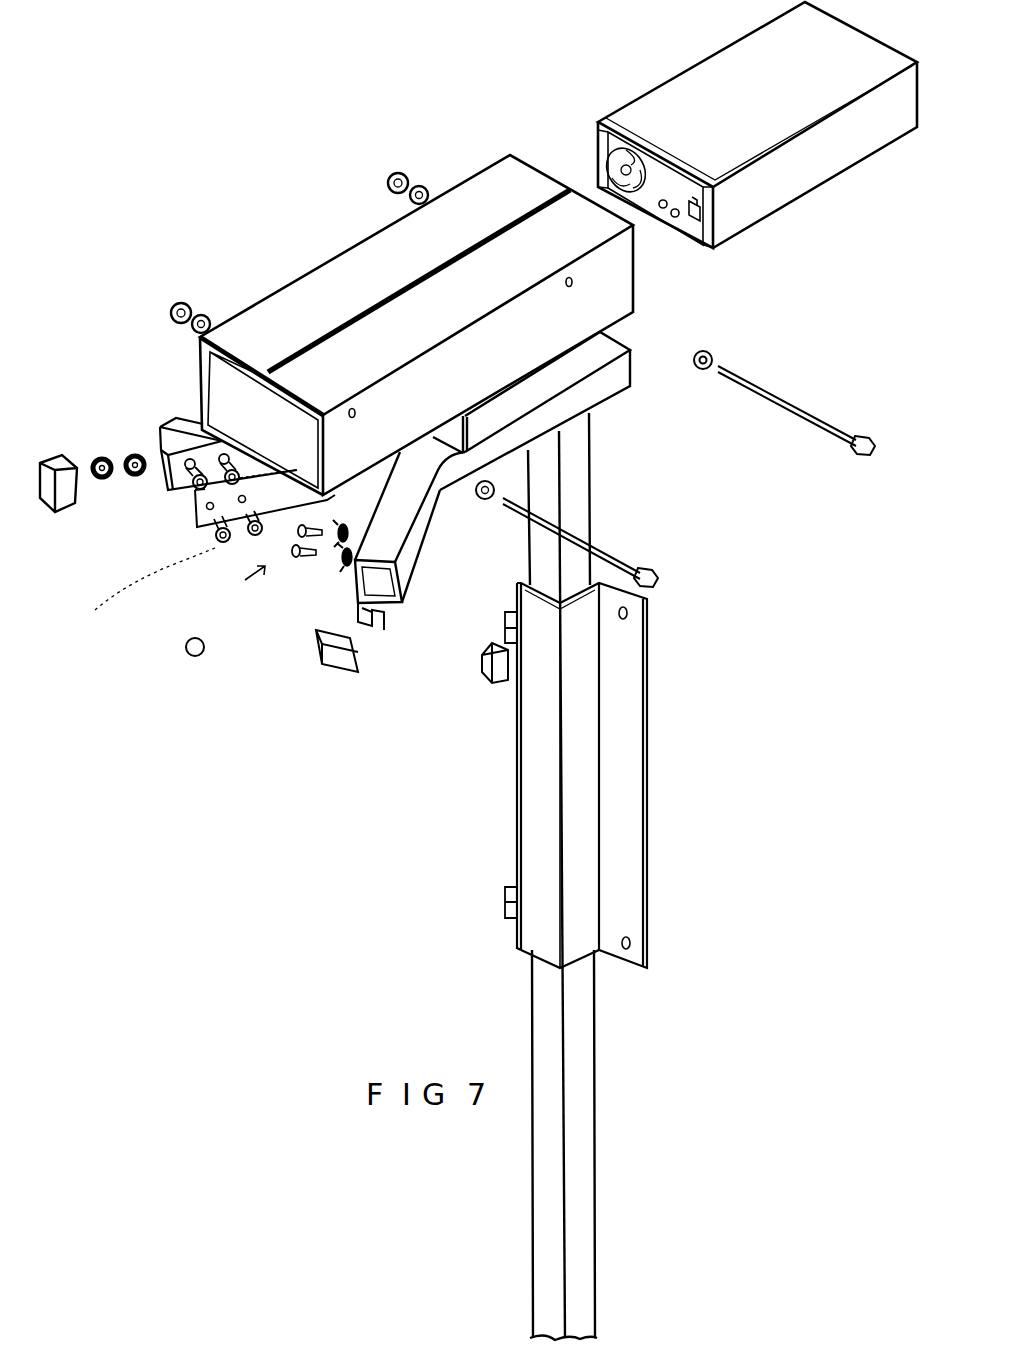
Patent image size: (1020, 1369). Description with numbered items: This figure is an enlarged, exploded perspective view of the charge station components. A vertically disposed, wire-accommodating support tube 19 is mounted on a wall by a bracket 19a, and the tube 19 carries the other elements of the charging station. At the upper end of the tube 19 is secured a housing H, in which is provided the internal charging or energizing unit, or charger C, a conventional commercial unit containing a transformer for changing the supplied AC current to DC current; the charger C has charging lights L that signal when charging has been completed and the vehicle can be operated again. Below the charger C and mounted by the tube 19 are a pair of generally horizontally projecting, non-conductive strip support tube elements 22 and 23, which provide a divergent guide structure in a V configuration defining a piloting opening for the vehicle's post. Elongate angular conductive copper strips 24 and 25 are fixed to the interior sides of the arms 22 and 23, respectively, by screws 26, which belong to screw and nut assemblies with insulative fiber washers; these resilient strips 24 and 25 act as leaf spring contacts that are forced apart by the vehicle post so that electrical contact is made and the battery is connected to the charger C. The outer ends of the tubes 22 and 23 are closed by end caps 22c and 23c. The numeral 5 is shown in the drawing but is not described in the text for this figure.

The charger C is at (678, 98).
The charging lights L is at (664, 200).
The housing H is at (618, 300).
The sensor assembly 5 is at (459, 173).
The strip support tube element 22 is at (177, 425).
The end cap 22c is at (63, 503).
The conductive strip 24 is at (213, 530).
The screws 26 is at (212, 548).
The conductive strip 25 is at (345, 612).
The strip support tube element 23 is at (455, 492).
The end cap 23c is at (353, 654).
The support tube 19 is at (594, 1100).
The bracket 19a is at (628, 738).